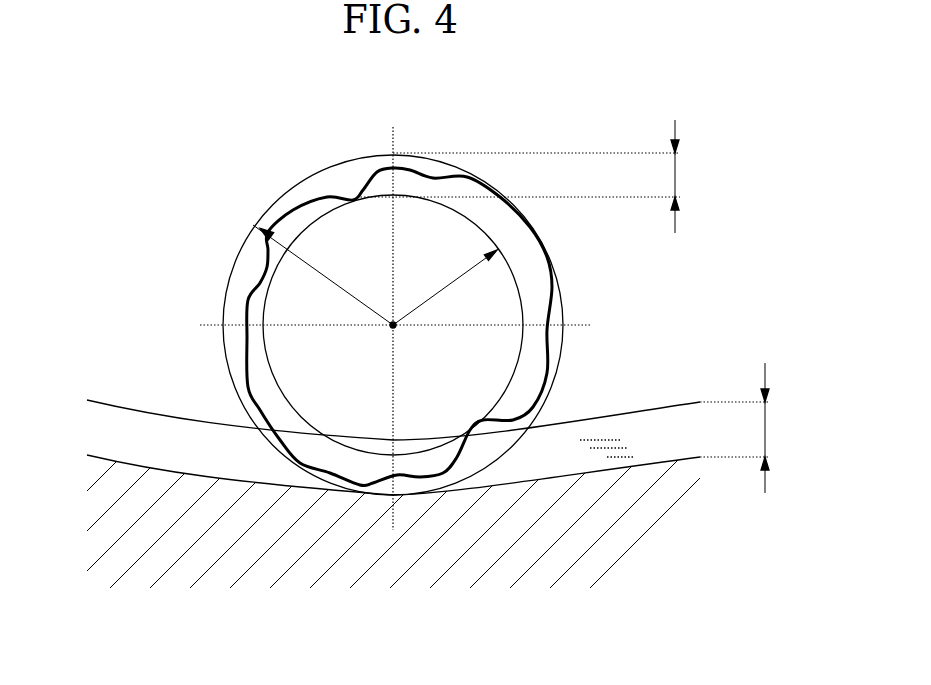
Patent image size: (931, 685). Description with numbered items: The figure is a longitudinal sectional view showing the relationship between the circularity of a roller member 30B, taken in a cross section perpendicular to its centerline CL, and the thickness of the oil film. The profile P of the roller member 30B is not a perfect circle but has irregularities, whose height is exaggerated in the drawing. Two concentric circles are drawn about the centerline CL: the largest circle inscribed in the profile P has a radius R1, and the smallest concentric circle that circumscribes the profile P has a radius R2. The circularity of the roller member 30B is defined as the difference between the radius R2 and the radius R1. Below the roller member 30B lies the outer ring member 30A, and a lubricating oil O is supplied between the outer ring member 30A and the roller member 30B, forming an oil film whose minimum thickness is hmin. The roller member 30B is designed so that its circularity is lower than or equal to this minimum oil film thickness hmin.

The outer ring member 30A is at (199, 478).
The roller member 30B is at (353, 200).
The profile P is at (267, 265).
The radius of the largest circle inscribed in the profile R1 is at (393, 325).
The radius of the smallest circumscribing circle R2 is at (393, 325).
The centerline CL is at (393, 325).
The lubricating oil O is at (645, 410).
The minimum oil film thickness hmin is at (763, 428).